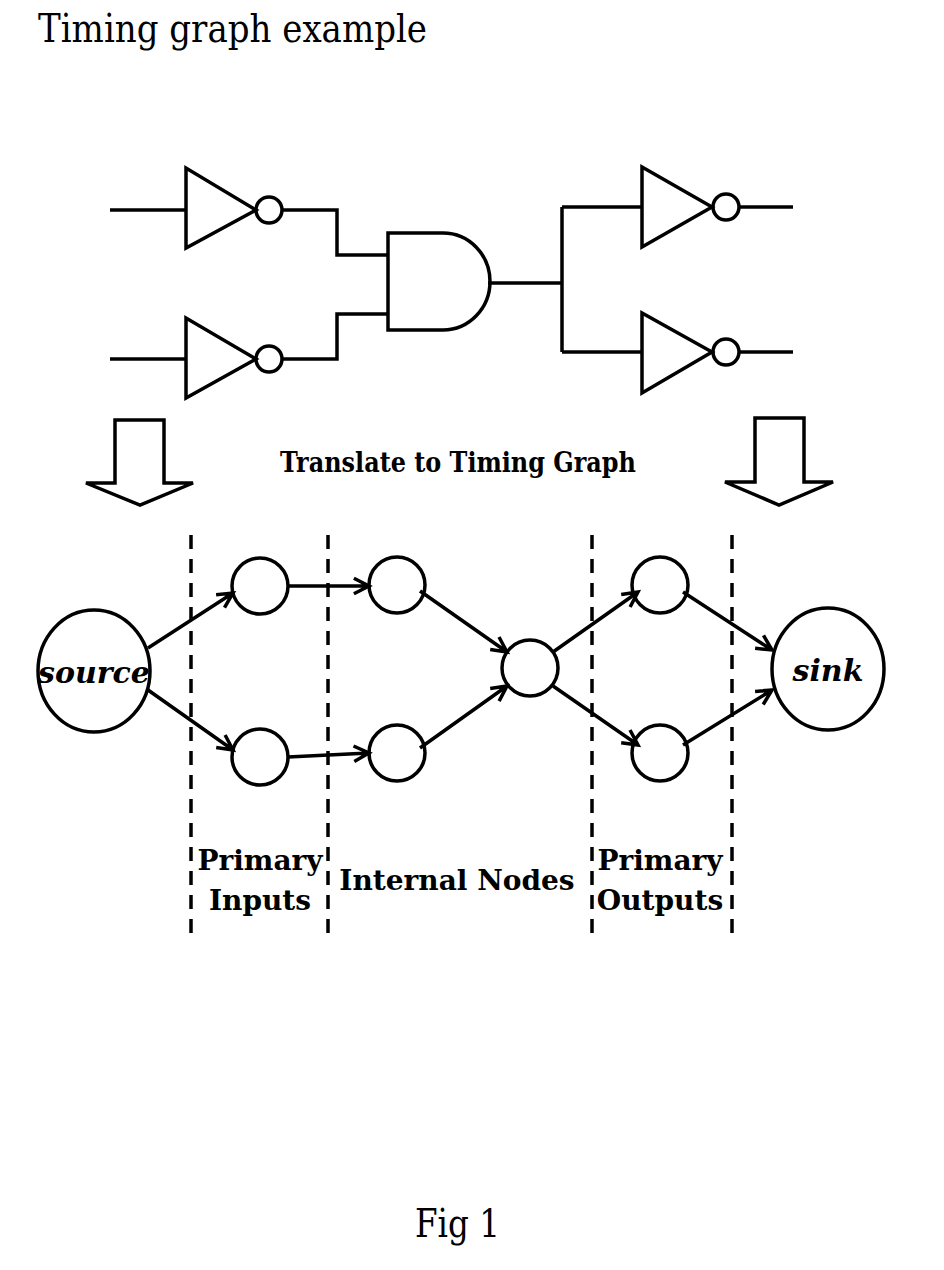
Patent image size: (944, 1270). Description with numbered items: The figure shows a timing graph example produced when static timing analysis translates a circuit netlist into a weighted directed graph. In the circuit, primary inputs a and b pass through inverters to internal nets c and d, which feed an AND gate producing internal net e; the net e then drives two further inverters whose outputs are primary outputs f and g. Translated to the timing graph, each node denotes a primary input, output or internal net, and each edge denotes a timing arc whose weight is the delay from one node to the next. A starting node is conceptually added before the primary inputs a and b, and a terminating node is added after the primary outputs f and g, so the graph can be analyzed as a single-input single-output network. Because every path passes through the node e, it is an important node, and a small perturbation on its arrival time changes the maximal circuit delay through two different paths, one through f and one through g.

The primary input node a is at (199, 391).
The primary input node b is at (199, 550).
The internal net node c is at (353, 411).
The internal net node d is at (353, 547).
The important internal node e is at (565, 451).
The primary output node f is at (719, 390).
The primary output node g is at (720, 547).